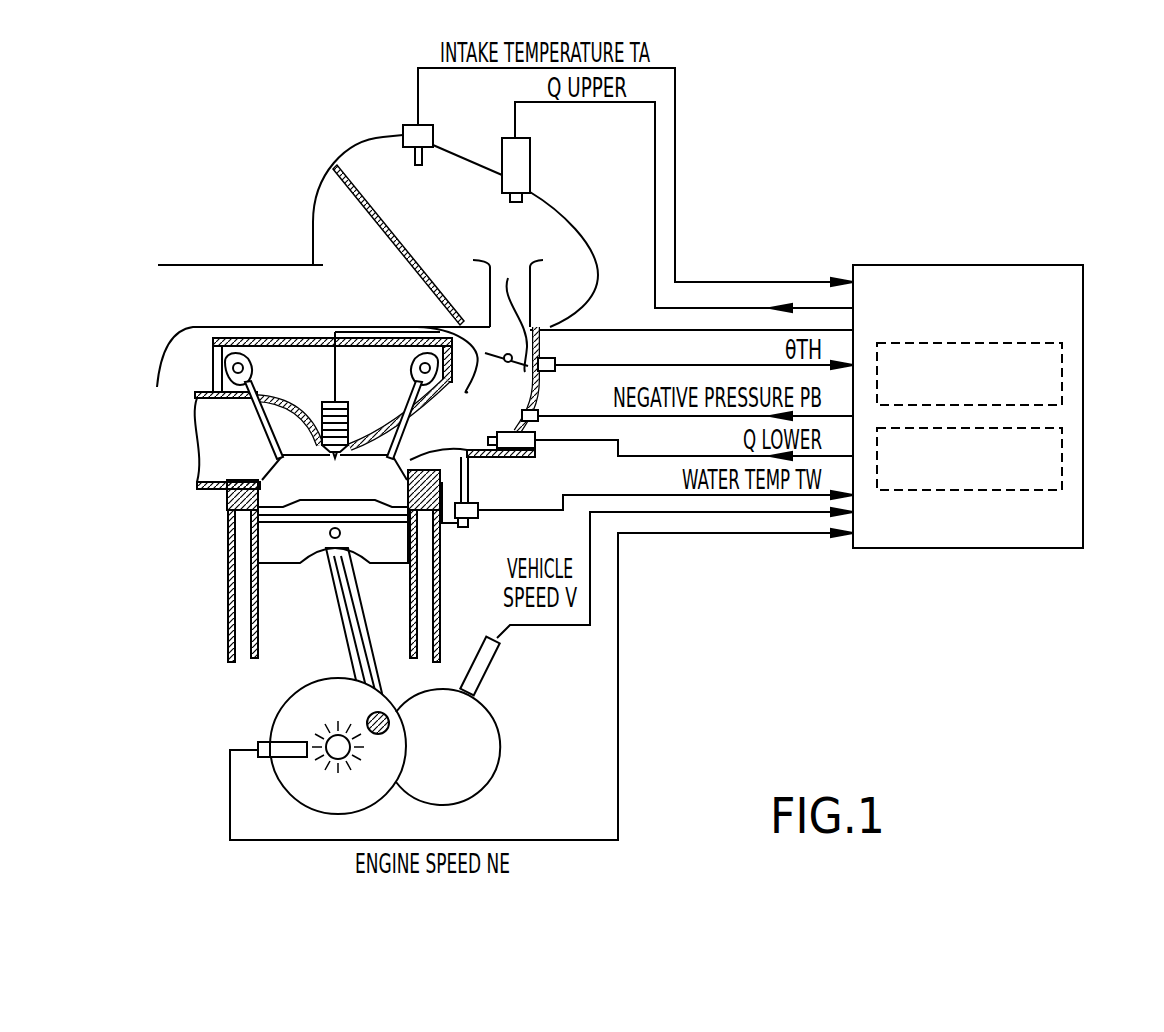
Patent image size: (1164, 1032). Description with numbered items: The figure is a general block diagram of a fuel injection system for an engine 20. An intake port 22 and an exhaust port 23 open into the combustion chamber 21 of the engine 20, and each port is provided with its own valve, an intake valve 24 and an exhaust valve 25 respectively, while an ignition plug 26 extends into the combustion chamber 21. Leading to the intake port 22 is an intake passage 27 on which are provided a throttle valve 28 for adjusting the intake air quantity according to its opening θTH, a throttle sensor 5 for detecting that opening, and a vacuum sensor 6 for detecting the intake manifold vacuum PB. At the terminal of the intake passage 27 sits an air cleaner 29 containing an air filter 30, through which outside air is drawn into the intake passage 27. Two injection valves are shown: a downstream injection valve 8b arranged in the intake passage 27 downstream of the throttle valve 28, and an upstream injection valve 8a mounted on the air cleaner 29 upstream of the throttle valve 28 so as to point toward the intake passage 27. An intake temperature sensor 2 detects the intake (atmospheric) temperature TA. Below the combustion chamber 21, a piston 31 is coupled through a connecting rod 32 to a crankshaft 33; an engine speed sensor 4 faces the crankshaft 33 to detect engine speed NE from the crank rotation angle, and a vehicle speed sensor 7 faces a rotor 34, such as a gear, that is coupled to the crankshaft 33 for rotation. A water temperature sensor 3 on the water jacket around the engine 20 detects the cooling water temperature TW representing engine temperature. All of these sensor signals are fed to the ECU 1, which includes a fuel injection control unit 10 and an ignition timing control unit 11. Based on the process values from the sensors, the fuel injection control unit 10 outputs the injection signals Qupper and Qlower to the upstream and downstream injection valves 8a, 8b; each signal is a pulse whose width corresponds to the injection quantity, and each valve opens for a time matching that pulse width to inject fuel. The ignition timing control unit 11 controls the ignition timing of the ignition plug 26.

The ECU (Engine Control Unit) 1 is at (1020, 548).
The intake temperature sensor 2 is at (434, 133).
The water temperature sensor 3 is at (480, 520).
The engine speed sensor 4 is at (265, 741).
The throttle sensor 5 is at (548, 358).
The vacuum sensor 6 is at (538, 410).
The vehicle speed sensor 7 is at (483, 673).
The upstream injection valve 8a is at (531, 162).
The downstream injection valve 8b is at (535, 445).
The fuel injection control unit 10 is at (1063, 367).
The ignition timing control unit 11 is at (1063, 458).
The engine 20 is at (203, 562).
The combustion chamber 21 is at (268, 497).
The intake port 22 is at (420, 460).
The exhaust port 23 is at (238, 470).
The intake valve 24 is at (403, 455).
The exhaust valve 25 is at (277, 467).
The ignition plug 26 is at (340, 400).
The intake passage 27 is at (420, 330).
The throttle valve 28 is at (506, 309).
The air cleaner 29 is at (577, 242).
The air filter 30 is at (395, 232).
The piston 31 is at (275, 562).
The connecting rod 32 is at (347, 600).
The crankshaft 33 is at (332, 754).
The rotor 34 is at (490, 733).